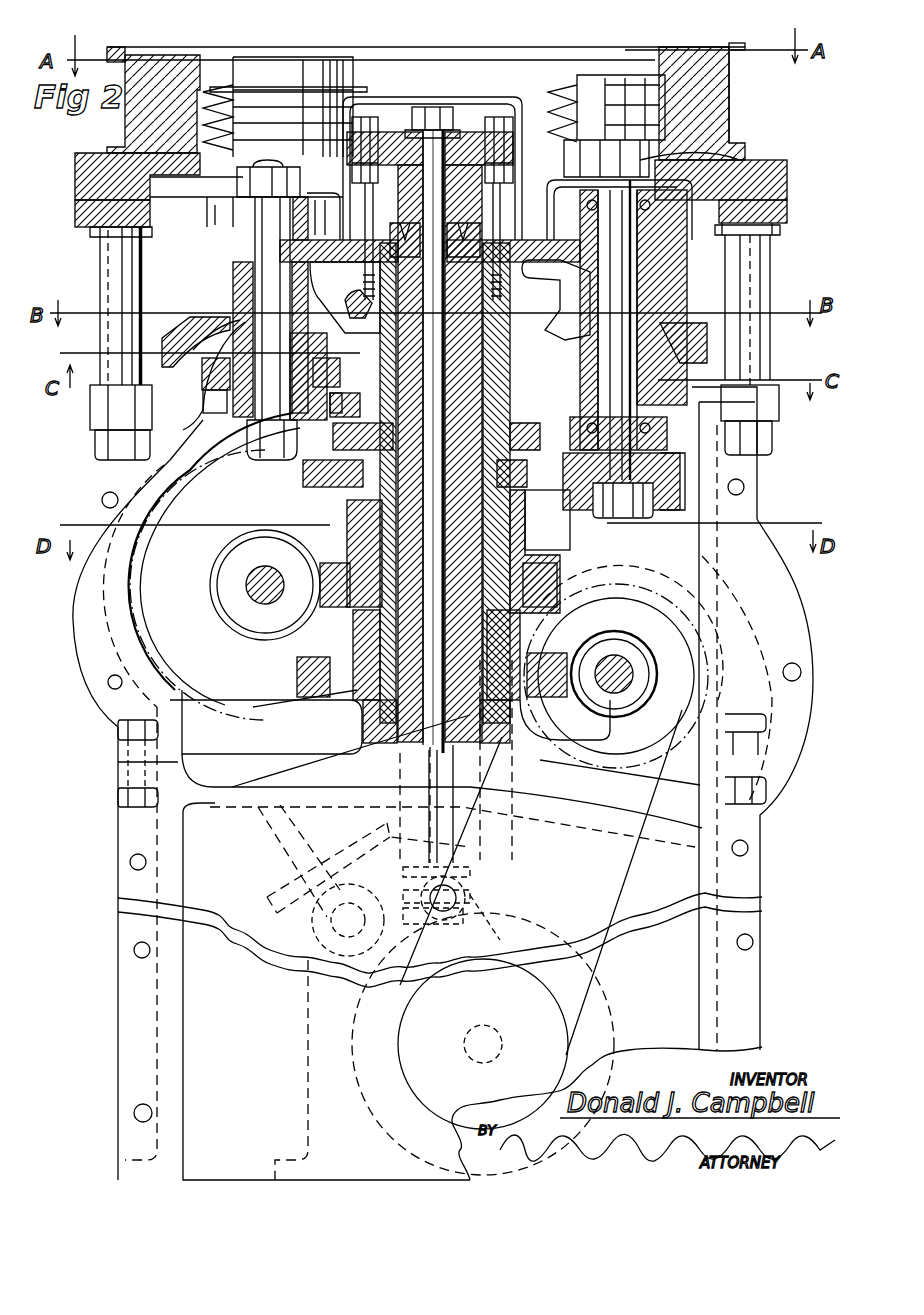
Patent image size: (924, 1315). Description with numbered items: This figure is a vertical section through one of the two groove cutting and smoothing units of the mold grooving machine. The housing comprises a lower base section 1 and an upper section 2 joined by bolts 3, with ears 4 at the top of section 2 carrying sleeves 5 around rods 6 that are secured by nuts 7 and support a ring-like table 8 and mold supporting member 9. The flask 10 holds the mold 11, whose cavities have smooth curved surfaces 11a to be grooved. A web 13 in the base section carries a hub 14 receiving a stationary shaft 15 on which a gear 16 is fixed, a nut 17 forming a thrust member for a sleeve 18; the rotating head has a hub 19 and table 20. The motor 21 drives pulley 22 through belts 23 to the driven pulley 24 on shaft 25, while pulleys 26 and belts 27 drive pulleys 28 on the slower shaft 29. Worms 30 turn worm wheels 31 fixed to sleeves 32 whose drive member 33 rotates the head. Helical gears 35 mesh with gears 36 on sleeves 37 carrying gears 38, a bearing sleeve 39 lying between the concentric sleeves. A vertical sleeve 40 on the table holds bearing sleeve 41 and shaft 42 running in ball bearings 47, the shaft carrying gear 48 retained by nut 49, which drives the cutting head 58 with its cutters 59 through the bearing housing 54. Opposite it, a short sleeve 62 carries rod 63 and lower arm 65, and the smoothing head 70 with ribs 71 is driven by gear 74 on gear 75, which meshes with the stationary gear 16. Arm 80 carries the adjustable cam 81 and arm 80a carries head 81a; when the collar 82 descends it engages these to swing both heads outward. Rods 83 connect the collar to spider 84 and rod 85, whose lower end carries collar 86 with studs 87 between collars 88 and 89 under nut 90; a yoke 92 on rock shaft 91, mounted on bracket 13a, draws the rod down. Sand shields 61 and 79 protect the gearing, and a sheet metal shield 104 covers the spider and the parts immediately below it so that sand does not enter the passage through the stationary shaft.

The base section 1 is at (740, 1003).
The section 2 is at (750, 568).
The bolts 3 is at (140, 812).
The ears 4 is at (96, 412).
The sleeves 5 is at (100, 270).
The rods 6 is at (120, 250).
The nuts 7 is at (100, 450).
The ring-like table 8 is at (787, 210).
The mold supporting member 9 is at (770, 170).
The flask 10 is at (730, 102).
The mold 11 is at (742, 121).
The smooth curved surfaces 11a is at (690, 95).
The supporting web or bracket 13 is at (297, 775).
The bracket 13a is at (285, 866).
The hub 14 is at (530, 852).
The stationary shaft 15 is at (541, 882).
The gear 16 is at (322, 438).
The nut 17 is at (392, 238).
The sleeve 18 is at (485, 362).
The hub 19 is at (498, 345).
The table 20 is at (205, 328).
The driving motor 21 is at (352, 1060).
The driving pulley 22 is at (440, 1085).
The endless belts 23 is at (615, 995).
The driven pulley 24 is at (693, 682).
The longitudinal shaft 25 is at (605, 690).
The belt pulleys 26 is at (680, 583).
The endless belts 27 is at (587, 583).
The driven pulleys 28 is at (262, 640).
The horizontal shaft 29 is at (265, 605).
The worms 30 is at (645, 640).
The worm wheels 31 is at (562, 700).
The sleeves 32 is at (358, 640).
The drive member 33 is at (345, 462).
The helical gears 35 is at (240, 585).
The gears 36 is at (570, 655).
The sleeves 37 is at (535, 545).
The gears 38 is at (533, 486).
The bearing sleeve 39 is at (365, 548).
The vertical sleeve 40 is at (600, 348).
The bearing sleeve 41 is at (652, 286).
The shaft 42 is at (652, 262).
The ball bearings 47 is at (590, 190).
The gear 48 is at (668, 512).
The nut 49 is at (620, 500).
The bearing receiving housing 54 is at (748, 165).
The cutting head 58 is at (612, 90).
The cutters 59 is at (554, 100).
The sand shield 61 is at (760, 185).
The short vertical sleeve 62 is at (135, 315).
The rod 63 is at (255, 248).
The lower arm 65 is at (240, 320).
The smoothing head 70 is at (288, 70).
The smoothing ribs 71 is at (132, 126).
The gear 74 is at (217, 420).
The gear 75 is at (232, 450).
The sand shield 79 is at (210, 208).
The arm 80 is at (683, 344).
The arm 80a is at (315, 320).
The adjustable cam 81 is at (556, 300).
The head 81a is at (228, 388).
The collar 82 is at (482, 236).
The rods 83 is at (333, 193).
The spider 84 is at (465, 115).
The elongated rod 85 is at (432, 105).
The collar 86 is at (470, 897).
The studs 87 is at (465, 925).
The collar 88 is at (470, 874).
The collar 89 is at (526, 919).
The nut 90 is at (483, 955).
The rock shaft 91 is at (345, 935).
The yoke 92 is at (438, 912).
The cover 104 is at (492, 97).